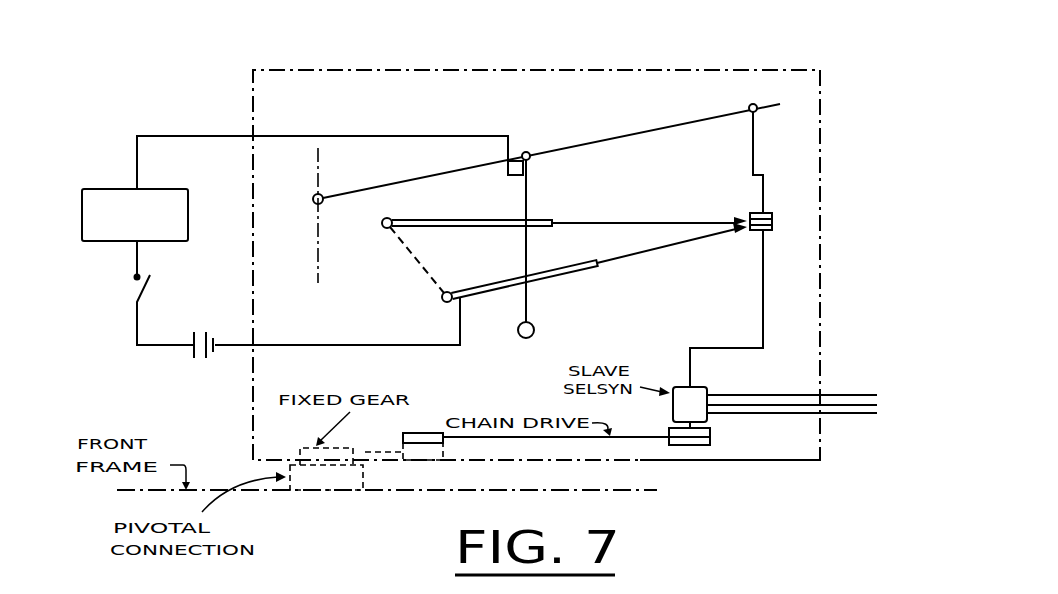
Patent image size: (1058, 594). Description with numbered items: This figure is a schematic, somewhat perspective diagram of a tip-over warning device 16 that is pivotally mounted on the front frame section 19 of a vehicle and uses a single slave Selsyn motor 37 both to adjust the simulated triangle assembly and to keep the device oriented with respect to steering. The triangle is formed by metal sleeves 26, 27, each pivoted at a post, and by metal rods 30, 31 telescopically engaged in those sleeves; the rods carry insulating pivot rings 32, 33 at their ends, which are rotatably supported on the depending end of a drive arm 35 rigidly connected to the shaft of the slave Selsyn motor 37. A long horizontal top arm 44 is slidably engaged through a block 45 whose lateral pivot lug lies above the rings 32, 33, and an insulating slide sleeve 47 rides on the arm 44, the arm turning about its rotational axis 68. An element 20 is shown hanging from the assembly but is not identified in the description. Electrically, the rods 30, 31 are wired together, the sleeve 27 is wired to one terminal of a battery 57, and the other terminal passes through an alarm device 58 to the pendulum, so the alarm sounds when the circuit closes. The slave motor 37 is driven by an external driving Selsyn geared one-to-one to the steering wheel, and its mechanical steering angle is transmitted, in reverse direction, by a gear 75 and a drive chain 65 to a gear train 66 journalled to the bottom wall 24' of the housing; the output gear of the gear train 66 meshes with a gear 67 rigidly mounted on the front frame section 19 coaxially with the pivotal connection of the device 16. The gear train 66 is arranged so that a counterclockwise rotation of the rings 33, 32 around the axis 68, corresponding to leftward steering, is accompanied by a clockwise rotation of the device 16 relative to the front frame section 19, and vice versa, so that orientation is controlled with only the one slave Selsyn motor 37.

The tip-over warning device 16 is at (773, 66).
The alarm device 58 is at (167, 190).
The battery 57 is at (199, 328).
The rotational axis 68 is at (318, 236).
The horizontal top arm 44 is at (565, 146).
The block 45 is at (748, 107).
The insulating slide sleeve 47 is at (530, 150).
The weight 20 is at (535, 327).
The metal sleeve 27 is at (437, 220).
The metal rod 31 is at (620, 220).
The metal sleeve 26 is at (476, 287).
The metal rod 30 is at (632, 255).
The insulating pivot ring 33 is at (771, 212).
The insulating pivot ring 32 is at (771, 231).
The drive arm 35 is at (718, 347).
The slave Selsyn motor 37 is at (707, 390).
The gear 75 is at (711, 441).
The bottom wall 24' is at (730, 447).
The drive chain 65 is at (625, 436).
The gear train 66 is at (381, 440).
The gear 67 is at (300, 452).
The front frame section 19 is at (421, 488).